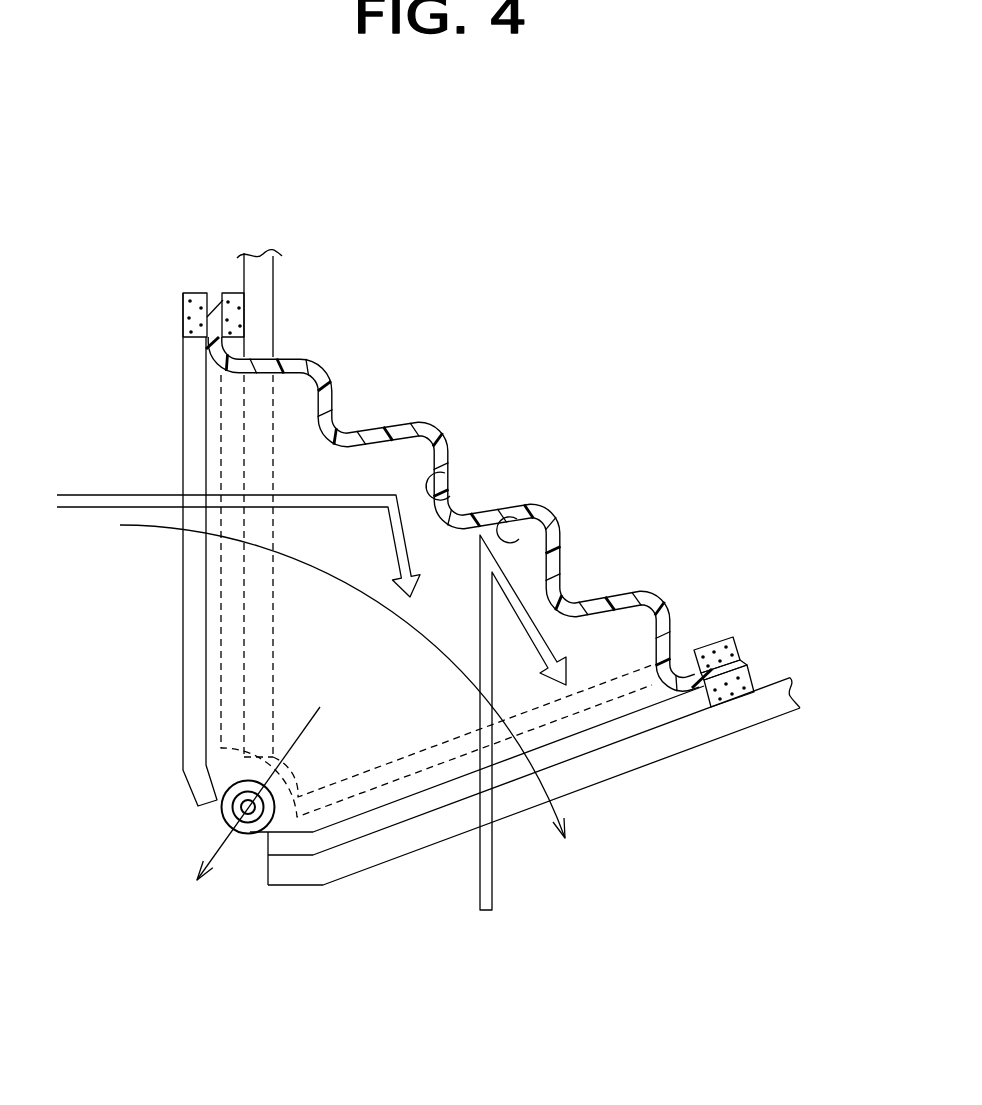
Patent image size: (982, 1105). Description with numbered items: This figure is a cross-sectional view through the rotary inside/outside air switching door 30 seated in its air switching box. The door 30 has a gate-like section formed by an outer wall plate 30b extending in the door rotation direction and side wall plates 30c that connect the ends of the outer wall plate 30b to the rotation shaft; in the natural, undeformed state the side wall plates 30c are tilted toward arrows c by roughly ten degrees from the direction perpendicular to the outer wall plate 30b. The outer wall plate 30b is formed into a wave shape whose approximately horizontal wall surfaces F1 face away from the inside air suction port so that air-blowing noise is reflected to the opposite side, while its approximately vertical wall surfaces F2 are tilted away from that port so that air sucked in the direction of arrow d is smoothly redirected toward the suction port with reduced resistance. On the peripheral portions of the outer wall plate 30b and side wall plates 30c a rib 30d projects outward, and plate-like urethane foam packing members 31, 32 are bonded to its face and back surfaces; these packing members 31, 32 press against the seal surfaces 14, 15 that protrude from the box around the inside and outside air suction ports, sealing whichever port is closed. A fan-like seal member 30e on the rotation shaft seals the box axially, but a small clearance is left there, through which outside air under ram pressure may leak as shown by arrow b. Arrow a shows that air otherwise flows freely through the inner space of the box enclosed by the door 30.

The seal surface 14 is at (267, 277).
The seal surface 15 is at (680, 743).
The inside/outside air switching door 30 is at (410, 405).
The outer wall plate 30b is at (432, 437).
The side wall plate 30c is at (357, 465).
The rib 30d is at (213, 292).
The seal member 30e is at (205, 775).
The packing member 31 is at (230, 292).
The packing member 32 is at (192, 292).
The wall surface F1 is at (517, 519).
The wall surface F2 is at (445, 473).
The arrow a is at (153, 528).
The arrow b is at (236, 845).
The arrow c is at (494, 884).
The arrow d is at (75, 508).